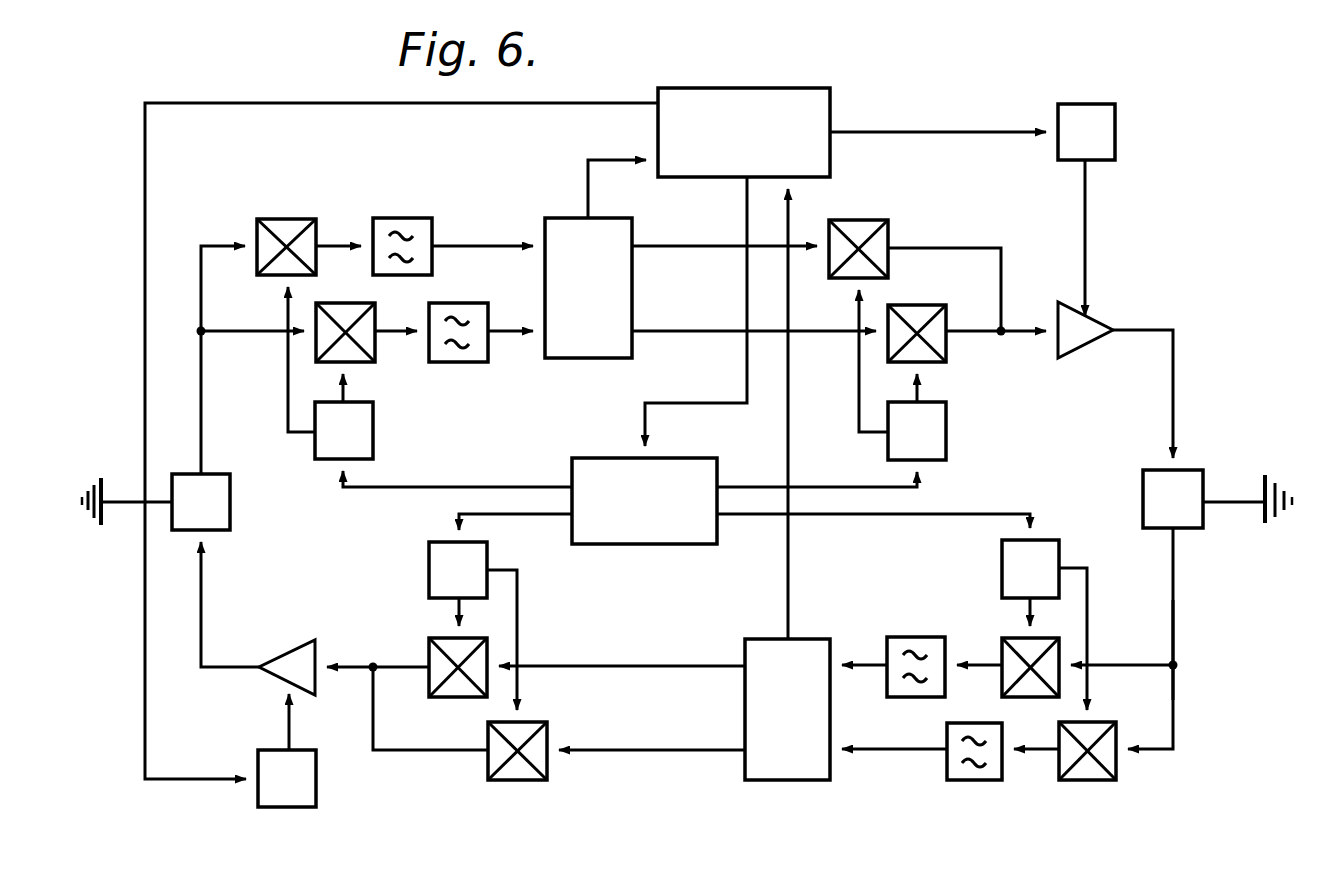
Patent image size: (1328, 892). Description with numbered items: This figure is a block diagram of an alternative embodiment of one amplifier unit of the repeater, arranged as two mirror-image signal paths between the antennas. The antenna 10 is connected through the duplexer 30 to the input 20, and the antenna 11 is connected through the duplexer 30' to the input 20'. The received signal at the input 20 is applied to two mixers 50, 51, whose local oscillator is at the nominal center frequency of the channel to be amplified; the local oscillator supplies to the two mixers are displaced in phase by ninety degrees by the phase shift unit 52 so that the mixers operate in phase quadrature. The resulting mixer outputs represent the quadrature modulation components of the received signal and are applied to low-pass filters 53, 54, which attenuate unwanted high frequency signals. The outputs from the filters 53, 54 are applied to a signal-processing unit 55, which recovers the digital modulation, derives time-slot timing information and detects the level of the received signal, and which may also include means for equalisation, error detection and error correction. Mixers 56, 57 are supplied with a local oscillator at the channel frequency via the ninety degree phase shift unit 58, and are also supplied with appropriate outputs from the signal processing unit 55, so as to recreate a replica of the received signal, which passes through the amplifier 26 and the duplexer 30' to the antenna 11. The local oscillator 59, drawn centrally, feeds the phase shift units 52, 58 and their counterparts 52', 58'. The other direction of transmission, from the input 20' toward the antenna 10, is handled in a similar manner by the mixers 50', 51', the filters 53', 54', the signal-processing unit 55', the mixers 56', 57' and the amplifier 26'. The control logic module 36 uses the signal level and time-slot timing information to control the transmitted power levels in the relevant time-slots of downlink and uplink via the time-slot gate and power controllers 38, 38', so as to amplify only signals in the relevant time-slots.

The antenna 10 is at (84, 520).
The antenna 11 is at (1282, 516).
The input 20 is at (228, 360).
The input 20' is at (1147, 650).
The amplifier 26 is at (1089, 345).
The amplifier 26' is at (280, 650).
The duplexer 30 is at (229, 502).
The duplexer 30' is at (1146, 499).
The control logic module 36 is at (766, 149).
The time-slot gate and power controller 38 is at (1086, 113).
The time-slot gate and power controller 38' is at (287, 801).
The mixer 50 is at (283, 226).
The mixer 50' is at (1103, 770).
The mixer 51 is at (345, 313).
The mixer 51' is at (1007, 647).
The 90 degree phase shift unit 52 is at (370, 428).
The 90 degree phase shift unit 52' is at (1005, 568).
The low-pass filter 53 is at (401, 226).
The low-pass filter 53' is at (976, 771).
The low-pass filter 54 is at (458, 313).
The low-pass filter 54' is at (915, 687).
The signal-processing unit 55 is at (588, 288).
The signal-processing unit 55' is at (787, 709).
The mixer 56 is at (858, 229).
The mixer 56' is at (519, 770).
The mixer 57 is at (926, 312).
The mixer 57' is at (456, 690).
The 90 degree phase shift unit 58 is at (946, 431).
The 90 degree phase shift unit 58' is at (435, 570).
The local oscillator 59 is at (666, 519).